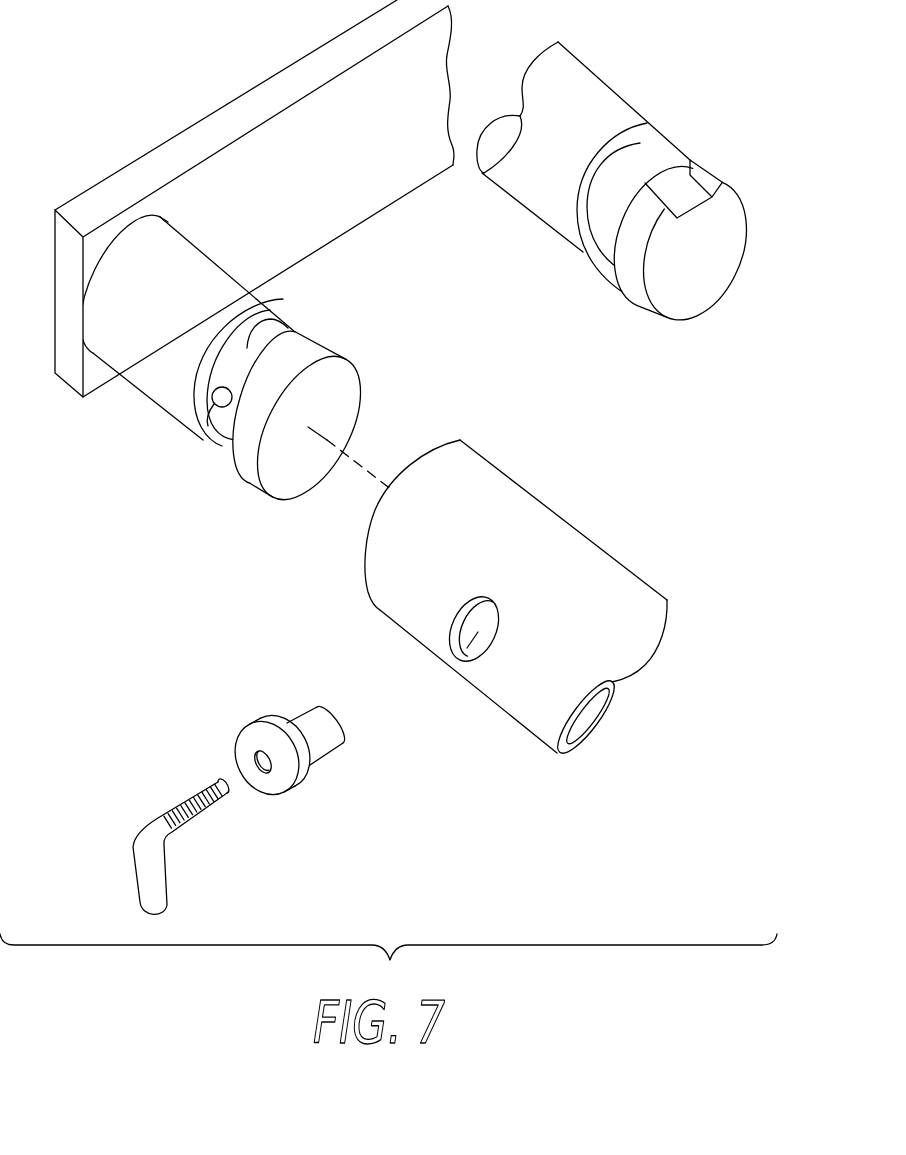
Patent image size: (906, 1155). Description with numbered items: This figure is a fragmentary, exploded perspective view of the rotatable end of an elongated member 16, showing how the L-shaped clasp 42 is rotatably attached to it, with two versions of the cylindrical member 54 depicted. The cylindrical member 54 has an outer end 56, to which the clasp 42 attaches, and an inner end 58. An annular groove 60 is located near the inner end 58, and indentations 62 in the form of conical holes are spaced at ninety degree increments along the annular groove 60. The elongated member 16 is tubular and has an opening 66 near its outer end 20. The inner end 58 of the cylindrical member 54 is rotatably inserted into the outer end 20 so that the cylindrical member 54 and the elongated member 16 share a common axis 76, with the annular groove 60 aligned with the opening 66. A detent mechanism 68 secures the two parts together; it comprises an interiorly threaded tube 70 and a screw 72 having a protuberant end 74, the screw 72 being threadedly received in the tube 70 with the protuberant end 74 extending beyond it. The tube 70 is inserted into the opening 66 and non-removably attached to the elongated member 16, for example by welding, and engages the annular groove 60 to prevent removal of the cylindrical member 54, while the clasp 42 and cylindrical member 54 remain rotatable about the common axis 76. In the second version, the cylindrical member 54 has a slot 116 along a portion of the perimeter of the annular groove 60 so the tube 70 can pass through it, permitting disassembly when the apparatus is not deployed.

The elongated member 16 is at (573, 583).
The outer end 20 is at (430, 445).
The clasp 42 is at (262, 160).
The cylindrical member 54 is at (150, 340).
The outer end 56 is at (117, 242).
The inner end 58 is at (358, 377).
The annular groove 60 is at (607, 210).
The indentations 62 is at (222, 400).
The opening 66 is at (478, 630).
The detent mechanism 68 is at (216, 807).
The tube 70 is at (315, 746).
The screw 72 is at (208, 847).
The protuberant end 74 is at (224, 789).
The common axis 76 is at (312, 428).
The slot 116 is at (688, 190).